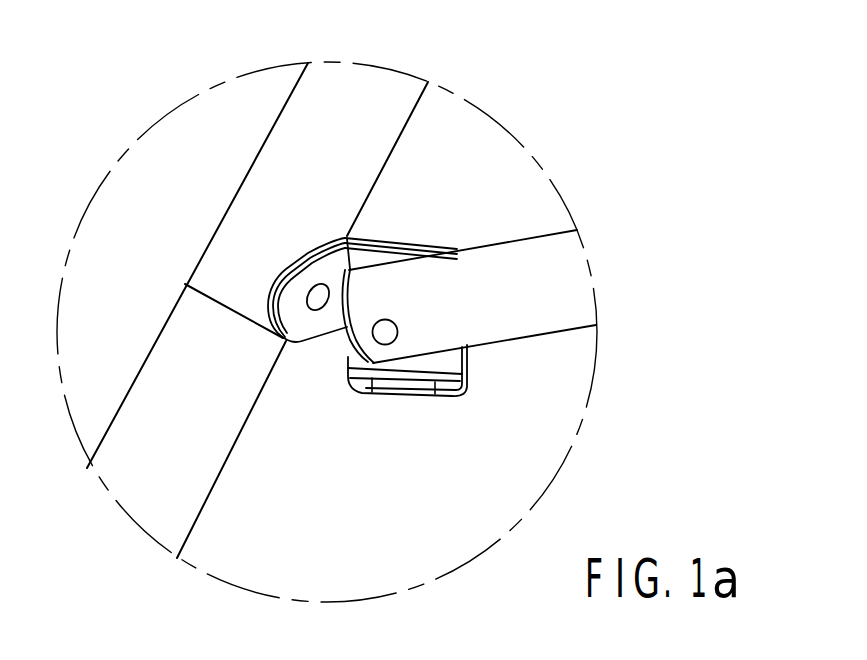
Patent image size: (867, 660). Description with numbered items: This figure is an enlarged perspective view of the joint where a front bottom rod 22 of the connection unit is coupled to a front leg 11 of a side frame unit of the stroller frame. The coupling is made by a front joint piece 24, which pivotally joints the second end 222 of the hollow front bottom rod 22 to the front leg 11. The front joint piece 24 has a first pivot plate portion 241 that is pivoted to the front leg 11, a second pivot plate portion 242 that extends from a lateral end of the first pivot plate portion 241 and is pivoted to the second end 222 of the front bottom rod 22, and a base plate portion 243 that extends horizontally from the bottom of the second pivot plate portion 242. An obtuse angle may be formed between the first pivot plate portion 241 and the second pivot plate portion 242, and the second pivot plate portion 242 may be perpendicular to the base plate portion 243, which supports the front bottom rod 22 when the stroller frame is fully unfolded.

The front leg 11 is at (227, 210).
The front bottom rod 22 is at (499, 324).
The second end 222 is at (421, 322).
The front joint piece 24 is at (390, 275).
The first pivot plate portion 241 is at (293, 292).
The second pivot plate portion 242 is at (408, 237).
The base plate portion 243 is at (447, 363).